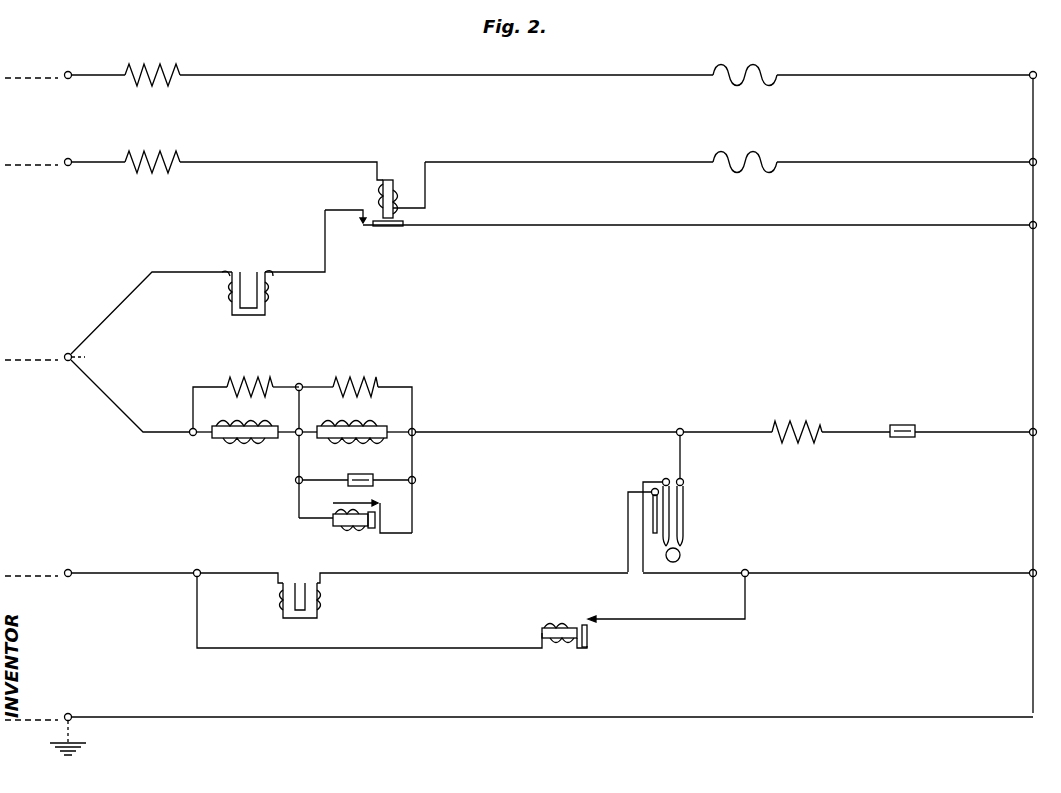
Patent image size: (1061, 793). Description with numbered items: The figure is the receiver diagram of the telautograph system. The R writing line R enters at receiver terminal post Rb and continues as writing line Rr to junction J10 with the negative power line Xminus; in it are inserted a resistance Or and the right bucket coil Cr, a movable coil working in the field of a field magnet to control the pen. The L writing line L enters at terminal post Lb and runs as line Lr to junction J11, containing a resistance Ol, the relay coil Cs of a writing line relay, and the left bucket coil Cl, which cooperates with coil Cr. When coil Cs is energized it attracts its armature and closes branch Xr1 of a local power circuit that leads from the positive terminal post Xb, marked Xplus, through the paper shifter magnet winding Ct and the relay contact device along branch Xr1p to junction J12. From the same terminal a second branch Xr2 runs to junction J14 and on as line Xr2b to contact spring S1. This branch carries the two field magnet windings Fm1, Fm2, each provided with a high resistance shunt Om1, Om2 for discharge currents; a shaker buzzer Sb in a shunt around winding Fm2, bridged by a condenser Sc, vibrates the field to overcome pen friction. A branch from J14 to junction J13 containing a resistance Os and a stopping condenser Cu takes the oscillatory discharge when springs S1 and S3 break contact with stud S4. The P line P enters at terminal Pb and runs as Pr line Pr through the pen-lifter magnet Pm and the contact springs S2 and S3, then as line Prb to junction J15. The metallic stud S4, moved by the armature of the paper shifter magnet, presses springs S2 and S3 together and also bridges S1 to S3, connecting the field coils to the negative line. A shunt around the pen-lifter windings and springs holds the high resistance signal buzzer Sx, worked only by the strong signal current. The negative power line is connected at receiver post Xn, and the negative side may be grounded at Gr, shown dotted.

The R writing line R is at (31, 75).
The receiver terminal post Rb is at (69, 66).
The resistance Or is at (153, 70).
The R writing line Rr is at (365, 70).
The right bucket coil Cr is at (745, 62).
The junction J10 is at (1031, 72).
The L writing line L is at (31, 162).
The receiver terminal post Lb is at (67, 153).
The resistance Ol is at (153, 157).
The writing line relay coil Cs is at (400, 181).
The L writing line Lr is at (489, 163).
The left bucket coil Cl is at (745, 149).
The junction J11 is at (1031, 159).
The junction J12 is at (1031, 222).
The branch line Xr1p is at (696, 237).
The receiver terminal post Xb is at (38, 353).
The positive receiver terminal Xplus is at (94, 357).
The branch of local power circuit Xr1 is at (118, 308).
The paper shifter magnet winding Ct is at (273, 262).
The branch line Xr2 is at (125, 429).
The branch line Xr2b is at (546, 420).
The high resistance shunt Om1 is at (248, 394).
The high resistance shunt Om2 is at (357, 446).
The field magnet winding Fm1 is at (245, 444).
The field magnet winding Fm2 is at (352, 443).
The condenser Sc is at (372, 482).
The shaker buzzer Sb is at (340, 532).
The junction J14 is at (681, 429).
The resistance Os is at (794, 427).
The stopping condenser Cu is at (908, 420).
The junction J13 is at (1031, 428).
The contact spring S1 is at (692, 490).
The contact spring S2 is at (653, 515).
The contact spring S3 is at (666, 480).
The metallic stud S4 is at (680, 555).
The P line P is at (31, 575).
The receiver terminal Pb is at (68, 563).
The Pr line Pr is at (236, 570).
The Pr line Prb is at (880, 568).
The pen-lifter magnet Pm is at (318, 606).
The junction J15 is at (1031, 569).
The signal buzzer Sx is at (556, 644).
The receiver post Xn is at (38, 708).
The negative power line Xminus is at (68, 713).
The ground Gr is at (79, 741).